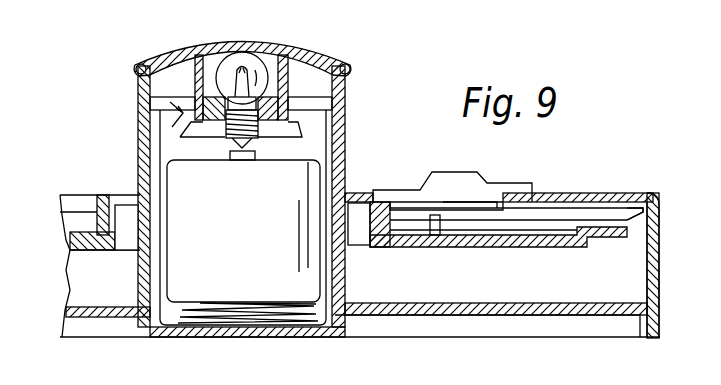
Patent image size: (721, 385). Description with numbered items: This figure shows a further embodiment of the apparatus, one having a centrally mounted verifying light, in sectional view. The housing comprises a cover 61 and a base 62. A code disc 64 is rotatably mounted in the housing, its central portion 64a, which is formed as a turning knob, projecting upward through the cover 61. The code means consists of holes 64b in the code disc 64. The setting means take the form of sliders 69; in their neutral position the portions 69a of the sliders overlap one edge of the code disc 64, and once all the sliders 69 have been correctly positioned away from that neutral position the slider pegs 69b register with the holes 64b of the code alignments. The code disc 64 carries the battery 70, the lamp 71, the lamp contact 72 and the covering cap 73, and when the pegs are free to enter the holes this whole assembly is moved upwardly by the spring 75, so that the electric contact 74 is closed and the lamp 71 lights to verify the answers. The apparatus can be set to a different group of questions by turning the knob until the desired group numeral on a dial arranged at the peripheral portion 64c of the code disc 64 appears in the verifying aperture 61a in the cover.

The cover 61 is at (660, 250).
The verifying aperture 61a is at (606, 192).
The base 62 is at (612, 275).
The code disc 64 is at (565, 247).
The central portion 64a is at (345, 135).
The holes 64b is at (492, 247).
The peripheral portion 64c is at (640, 205).
The sliders 69 is at (470, 180).
The portions of the sliders 69a is at (378, 190).
The slider pegs 69b is at (430, 238).
The battery 70 is at (243, 231).
The lamp 71 is at (242, 56).
The lamp contact 72 is at (293, 140).
The covering cap 73 is at (348, 62).
The electric contact 74 is at (160, 125).
The spring 75 is at (232, 300).